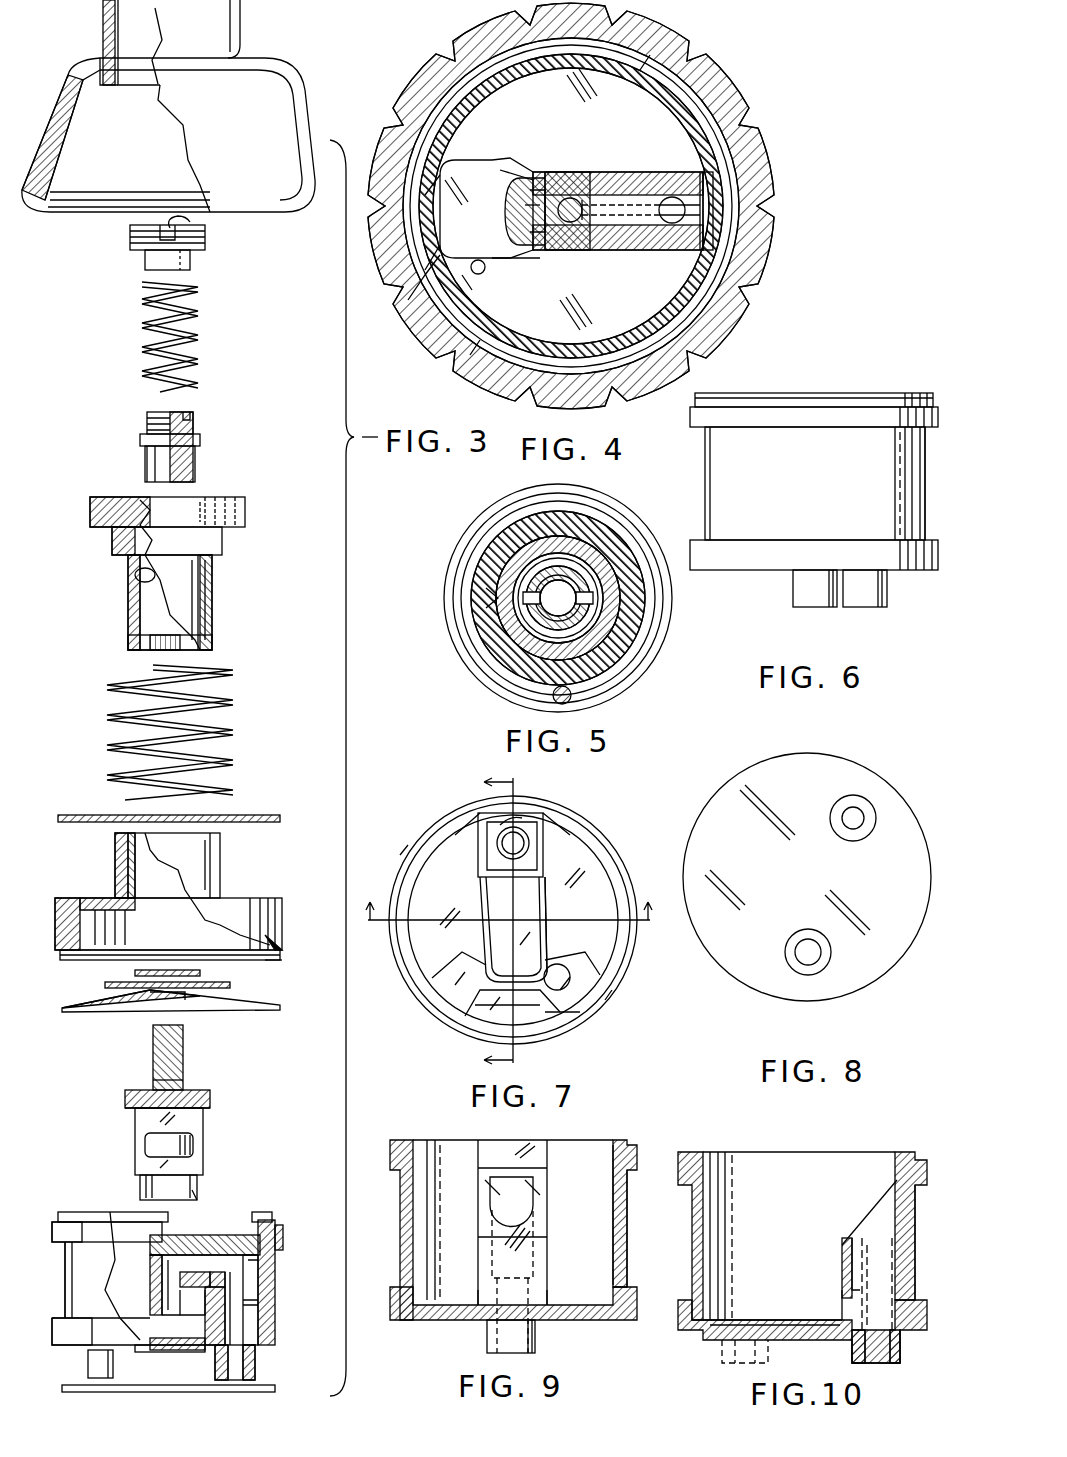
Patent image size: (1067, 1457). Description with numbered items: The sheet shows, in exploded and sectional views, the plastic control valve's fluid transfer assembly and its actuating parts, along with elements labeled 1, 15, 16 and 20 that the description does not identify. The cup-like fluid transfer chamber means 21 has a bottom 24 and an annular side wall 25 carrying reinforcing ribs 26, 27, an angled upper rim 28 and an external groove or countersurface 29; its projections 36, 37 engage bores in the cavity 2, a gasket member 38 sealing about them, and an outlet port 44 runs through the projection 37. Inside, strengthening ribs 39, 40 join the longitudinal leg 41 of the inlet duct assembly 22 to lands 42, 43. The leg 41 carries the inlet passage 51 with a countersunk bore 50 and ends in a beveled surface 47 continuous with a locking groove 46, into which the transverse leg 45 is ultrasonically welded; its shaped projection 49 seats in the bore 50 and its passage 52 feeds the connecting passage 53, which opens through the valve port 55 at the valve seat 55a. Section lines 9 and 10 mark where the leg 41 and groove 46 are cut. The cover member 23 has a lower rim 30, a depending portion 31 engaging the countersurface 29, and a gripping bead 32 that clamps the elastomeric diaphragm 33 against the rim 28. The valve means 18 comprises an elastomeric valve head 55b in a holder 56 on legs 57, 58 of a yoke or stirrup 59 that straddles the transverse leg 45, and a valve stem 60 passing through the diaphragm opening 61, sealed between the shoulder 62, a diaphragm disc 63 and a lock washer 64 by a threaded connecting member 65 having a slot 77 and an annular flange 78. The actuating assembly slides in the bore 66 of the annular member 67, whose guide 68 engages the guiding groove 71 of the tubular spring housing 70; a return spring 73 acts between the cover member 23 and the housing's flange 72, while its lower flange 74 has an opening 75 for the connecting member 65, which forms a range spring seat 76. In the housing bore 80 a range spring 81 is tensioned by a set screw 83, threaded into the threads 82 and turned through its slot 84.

In FIG. 4, the cap assembly 1 is at (423, 81).
In FIG. 4, the cavity 2 is at (720, 118).
In FIG. 7, the section line 9 is at (510, 920).
In FIG. 7, the section line 10 is at (510, 928).
In FIG. 3, the cap shell 15 is at (283, 98).
In FIG. 3, the knob 16 is at (225, 28).
In FIG. 3, the valve means 18 is at (97, 1103).
In FIG. 3, the adjusting nut 20 is at (128, 268).
In FIG. 3, the fluid transfer chamber means 21 is at (50, 1250).
In FIG. 6, the fluid transfer chamber means 21 is at (755, 390).
In FIG. 7, the fluid transfer chamber means 21 is at (403, 836).
In FIG. 8, the fluid transfer chamber means 21 is at (741, 762).
In FIG. 9, the fluid transfer chamber means 21 is at (426, 1118).
In FIG. 10, the fluid transfer chamber means 21 is at (741, 1135).
In FIG. 3, the inlet duct assembly 22 is at (218, 1228).
In FIG. 3, the cover member 23 is at (65, 920).
In FIG. 3, the bottom 24 is at (185, 1350).
In FIG. 8, the bottom 24 is at (900, 940).
In FIG. 3, the annular side wall 25 is at (66, 1280).
In FIG. 4, the annular side wall 25 is at (640, 338).
In FIG. 9, the annular side wall 25 is at (622, 1235).
In FIG. 3, the reinforcing rib 26 is at (283, 1232).
In FIG. 6, the reinforcing rib 26 is at (930, 428).
In FIG. 9, the reinforcing rib 26 is at (637, 1160).
In FIG. 10, the reinforcing rib 26 is at (927, 1175).
In FIG. 3, the reinforcing rib 27 is at (52, 1333).
In FIG. 6, the reinforcing rib 27 is at (940, 553).
In FIG. 9, the reinforcing rib 27 is at (630, 1318).
In FIG. 10, the reinforcing rib 27 is at (682, 1305).
In FIG. 3, the upper edge or rim 28 is at (262, 1232).
In FIG. 6, the upper edge or rim 28 is at (922, 392).
In FIG. 7, the upper edge or rim 28 is at (600, 858).
In FIG. 9, the upper edge or rim 28 is at (618, 1140).
In FIG. 10, the upper edge or rim 28 is at (905, 1152).
In FIG. 3, the external groove or countersurface 29 is at (58, 1222).
In FIG. 6, the external groove or countersurface 29 is at (932, 405).
In FIG. 9, the external groove or countersurface 29 is at (393, 1155).
In FIG. 10, the external groove or countersurface 29 is at (690, 1158).
In FIG. 3, the lower edge or rim 30 is at (278, 945).
In FIG. 3, the annular depending portion 31 is at (62, 955).
In FIG. 3, the gripping bead 32 is at (270, 958).
In FIG. 3, the elastomeric diaphragm member 33 is at (95, 1003).
In FIG. 3, the first downwardly extending projection 36 is at (250, 1362).
In FIG. 6, the first downwardly extending projection 36 is at (800, 590).
In FIG. 8, the first downwardly extending projection 36 is at (830, 958).
In FIG. 9, the first downwardly extending projection 36 is at (532, 1335).
In FIG. 10, the first downwardly extending projection 36 is at (900, 1350).
In FIG. 3, the second downwardly extending projection 37 is at (90, 1366).
In FIG. 6, the second downwardly extending projection 37 is at (878, 590).
In FIG. 8, the second downwardly extending projection 37 is at (863, 835).
In FIG. 10, the second downwardly extending projection 37 is at (768, 1352).
In FIG. 3, the gasket member 38 is at (72, 1388).
In FIG. 4, the supporting or strengthening rib 39 is at (520, 258).
In FIG. 7, the supporting or strengthening rib 39 is at (545, 903).
In FIG. 9, the supporting or strengthening rib 39 is at (550, 1300).
In FIG. 3, the supporting or strengthening rib 40 is at (160, 1340).
In FIG. 4, the supporting or strengthening rib 40 is at (515, 160).
In FIG. 7, the supporting or strengthening rib 40 is at (482, 905).
In FIG. 9, the supporting or strengthening rib 40 is at (478, 1303).
In FIG. 10, the supporting or strengthening rib 40 is at (783, 1318).
In FIG. 3, the longitudinal leg 41 is at (207, 1320).
In FIG. 7, the longitudinal leg 41 is at (468, 832).
In FIG. 9, the longitudinal leg 41 is at (540, 1250).
In FIG. 10, the longitudinal leg 41 is at (842, 1278).
In FIG. 4, the thickened section or land 42 is at (452, 280).
In FIG. 7, the thickened section or land 42 is at (565, 972).
In FIG. 4, the thickened section or land 43 is at (470, 150).
In FIG. 7, the thickened section or land 43 is at (455, 975).
In FIG. 4, the outlet passage or port 44 is at (470, 263).
In FIG. 7, the outlet passage or port 44 is at (552, 988).
In FIG. 8, the outlet passage or port 44 is at (845, 812).
In FIG. 10, the outlet passage or port 44 is at (735, 1352).
In FIG. 3, the transverse leg 45 is at (190, 1240).
In FIG. 4, the transverse leg 45 is at (625, 182).
In FIG. 4, the locking groove or inset 46 is at (713, 180).
In FIG. 10, the locking groove or inset 46 is at (895, 1178).
In FIG. 7, the uppermost end or surface 47 is at (538, 857).
In FIG. 9, the uppermost end or surface 47 is at (540, 1210).
In FIG. 10, the uppermost end or surface 47 is at (843, 1240).
In FIG. 3, the shaped projection 49 is at (215, 1282).
In FIG. 4, the shaped projection 49 is at (668, 195).
In FIG. 3, the shaped countersunk bore 50 is at (258, 1305).
In FIG. 4, the shaped countersunk bore 50 is at (675, 222).
In FIG. 7, the shaped countersunk bore 50 is at (540, 835).
In FIG. 9, the shaped countersunk bore 50 is at (492, 1235).
In FIG. 10, the shaped countersunk bore 50 is at (895, 1240).
In FIG. 3, the inlet passage 51 is at (238, 1325).
In FIG. 7, the inlet passage 51 is at (503, 848).
In FIG. 8, the inlet passage 51 is at (797, 945).
In FIG. 9, the inlet passage 51 is at (497, 1337).
In FIG. 10, the inlet passage 51 is at (888, 1300).
In FIG. 3, the passage 52 is at (240, 1288).
In FIG. 4, the passage 52 is at (672, 225).
In FIG. 3, the connecting passage 53 is at (150, 1265).
In FIG. 4, the connecting passage 53 is at (540, 195).
In FIG. 5, the connecting passage 53 is at (643, 628).
In FIG. 4, the valve port 55 is at (605, 250).
In FIG. 3, the valve seat 55a is at (175, 1298).
In FIG. 3, the valve head 55b is at (193, 1145).
In FIG. 4, the valve head 55b is at (540, 215).
In FIG. 3, the valve head holder 56 is at (200, 1178).
In FIG. 4, the valve head holder 56 is at (545, 238).
In FIG. 3, the leg 57 is at (135, 1125).
In FIG. 4, the leg 57 is at (568, 172).
In FIG. 4, the leg 58 is at (580, 250).
In FIG. 3, the yoke member or stirrup 59 is at (200, 1095).
In FIG. 3, the valve stem 60 is at (183, 1050).
In FIG. 5, the valve stem 60 is at (561, 604).
In FIG. 3, the medially disposed opening 61 is at (158, 1000).
In FIG. 3, the flat upper shoulder 62 is at (131, 1086).
In FIG. 3, the diaphragm disc 63 is at (220, 984).
In FIG. 3, the lock washer 64 is at (190, 970).
In FIG. 3, the connecting member 65 is at (195, 460).
In FIG. 5, the connecting member 65 is at (580, 560).
In FIG. 3, the elongated bore 66 is at (115, 837).
In FIG. 3, the elongated longitudinally extending annular member 67 is at (115, 862).
In FIG. 3, the projection or guide 68 is at (135, 880).
In FIG. 5, the projection or guide 68 is at (490, 598).
In FIG. 3, the tubular spring housing 70 is at (205, 580).
In FIG. 5, the tubular spring housing 70 is at (598, 573).
In FIG. 3, the guiding groove 71 is at (130, 610).
In FIG. 5, the guiding groove 71 is at (495, 595).
In FIG. 3, the outwardly extending flange 72 is at (235, 512).
In FIG. 5, the outwardly extending flange 72 is at (470, 670).
In FIG. 3, the return spring 73 is at (233, 730).
In FIG. 3, the lower inwardly extending flange or shoulder 74 is at (212, 645).
In FIG. 3, the opening 75 is at (165, 638).
In FIG. 3, the range spring seat 76 is at (192, 418).
In FIG. 5, the slot 77 is at (595, 598).
In FIG. 3, the annular flange 78 is at (142, 440).
In FIG. 3, the bore 80 is at (135, 578).
In FIG. 3, the range spring 81 is at (198, 316).
In FIG. 5, the range spring 81 is at (568, 648).
In FIG. 3, the threaded portion 82 is at (145, 497).
In FIG. 3, the range spring set screw 83 is at (130, 237).
In FIG. 3, the slot 84 is at (190, 222).